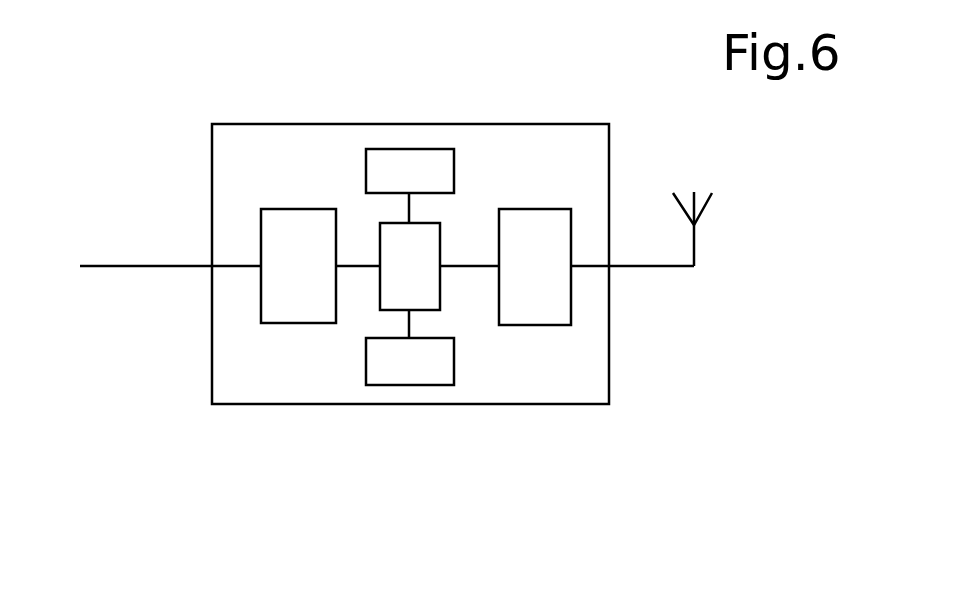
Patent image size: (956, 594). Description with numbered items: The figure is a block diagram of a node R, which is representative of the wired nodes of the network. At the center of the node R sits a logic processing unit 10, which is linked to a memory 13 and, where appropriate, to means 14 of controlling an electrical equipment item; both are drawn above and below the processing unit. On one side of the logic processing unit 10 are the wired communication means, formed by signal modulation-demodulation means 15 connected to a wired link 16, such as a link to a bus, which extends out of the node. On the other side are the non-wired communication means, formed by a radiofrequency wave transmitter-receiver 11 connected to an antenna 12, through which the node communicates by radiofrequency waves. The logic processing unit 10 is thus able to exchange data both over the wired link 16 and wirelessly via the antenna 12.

The node R is at (519, 428).
The logic processing unit 10 is at (386, 291).
The radiofrequency wave transmitter-receiver 11 is at (550, 235).
The antenna 12 is at (694, 268).
The memory 13 is at (425, 160).
The means of controlling an electrical equipment item 14 is at (431, 371).
The signal modulation-demodulation means 15 is at (285, 228).
The wired link 16 is at (127, 266).